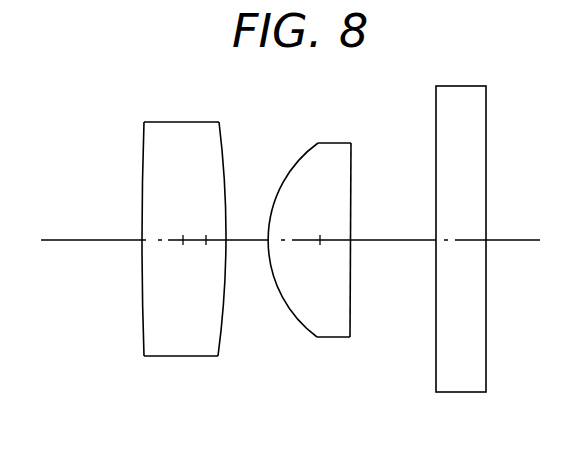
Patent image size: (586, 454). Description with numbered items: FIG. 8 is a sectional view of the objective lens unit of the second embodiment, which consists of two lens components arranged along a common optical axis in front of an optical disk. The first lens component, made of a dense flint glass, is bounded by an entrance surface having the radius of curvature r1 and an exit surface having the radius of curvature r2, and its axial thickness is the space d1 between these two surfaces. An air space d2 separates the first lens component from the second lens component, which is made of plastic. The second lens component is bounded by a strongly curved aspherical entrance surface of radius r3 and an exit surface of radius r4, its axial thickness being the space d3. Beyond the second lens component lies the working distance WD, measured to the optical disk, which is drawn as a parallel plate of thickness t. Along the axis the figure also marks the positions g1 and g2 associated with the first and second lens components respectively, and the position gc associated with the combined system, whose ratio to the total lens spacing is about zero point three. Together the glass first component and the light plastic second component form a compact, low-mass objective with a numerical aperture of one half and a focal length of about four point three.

The radius of curvature of the first lens surface r1 is at (144, 347).
The radius of curvature of the second lens surface r2 is at (218, 347).
The radius of curvature of the third lens surface r3 is at (301, 330).
The radius of curvature of the fourth lens surface r4 is at (350, 328).
The space between the first and second lens surfaces d1 is at (143, 238).
The space between the second and third lens surfaces d2 is at (247, 239).
The space between the third and fourth lens surfaces d3 is at (308, 240).
The working distance WD is at (403, 240).
The thickness of the optical disk t is at (470, 240).
The g1 value of the first lens component g1 is at (186, 254).
The gc value of the lens combination gc is at (210, 253).
The g2 value of the second lens component g2 is at (322, 254).